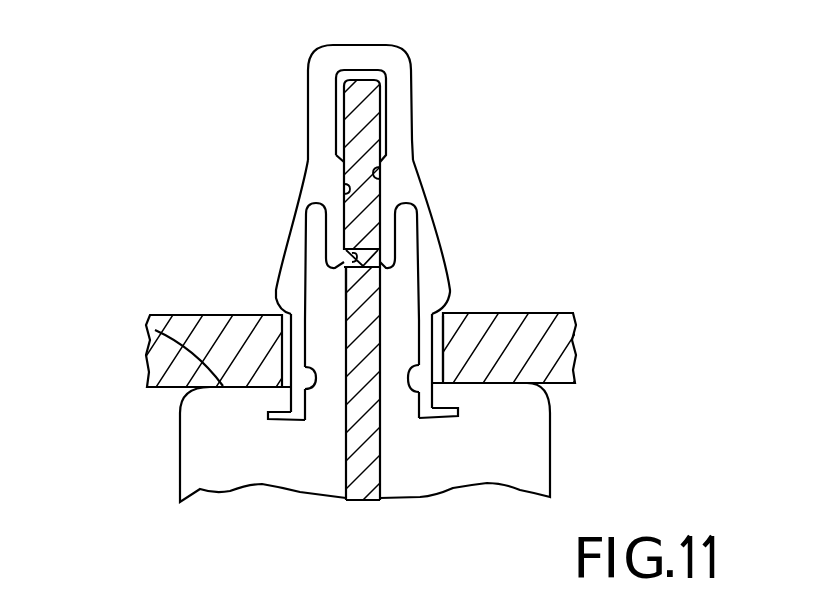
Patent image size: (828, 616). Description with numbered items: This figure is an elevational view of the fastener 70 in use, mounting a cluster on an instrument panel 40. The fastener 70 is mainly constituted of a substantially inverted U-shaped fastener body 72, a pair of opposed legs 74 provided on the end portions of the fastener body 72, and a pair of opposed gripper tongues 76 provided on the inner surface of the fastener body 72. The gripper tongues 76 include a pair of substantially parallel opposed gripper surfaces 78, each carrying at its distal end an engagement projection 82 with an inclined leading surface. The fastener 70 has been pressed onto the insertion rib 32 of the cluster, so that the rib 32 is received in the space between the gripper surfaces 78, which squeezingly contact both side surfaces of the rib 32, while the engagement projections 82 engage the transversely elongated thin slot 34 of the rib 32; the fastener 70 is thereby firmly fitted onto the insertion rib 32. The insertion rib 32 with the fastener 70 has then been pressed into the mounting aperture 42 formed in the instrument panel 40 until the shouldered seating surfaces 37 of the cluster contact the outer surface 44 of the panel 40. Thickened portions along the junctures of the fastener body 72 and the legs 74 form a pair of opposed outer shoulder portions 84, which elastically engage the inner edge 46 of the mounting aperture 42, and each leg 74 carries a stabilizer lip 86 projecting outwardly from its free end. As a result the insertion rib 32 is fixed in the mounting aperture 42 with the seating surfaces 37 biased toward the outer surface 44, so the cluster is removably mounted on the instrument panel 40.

The fastener 70 is at (286, 41).
The fastener body 72 is at (405, 107).
The gripper surfaces 78 is at (343, 184).
The gripper tongues 76 is at (330, 230).
The outer shoulder portions 84 is at (277, 305).
The mounting aperture 42 is at (282, 345).
The legs 74 is at (420, 345).
The thin slot 34 is at (385, 280).
The engagement projection 82 is at (344, 266).
The insertion rib 32 is at (346, 443).
The stabilizer lip 86 is at (282, 423).
The instrument panel 40 is at (567, 332).
The seating surfaces 37 is at (278, 348).
The inner edge 46 is at (464, 331).
The outer surface 44 is at (567, 385).